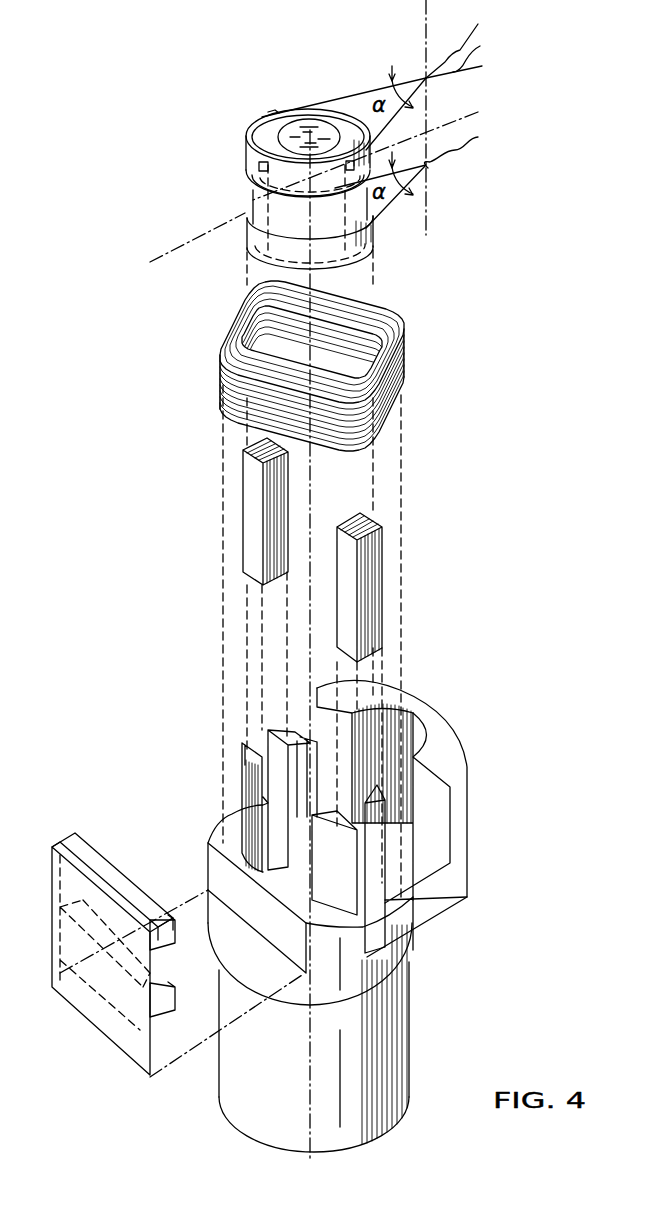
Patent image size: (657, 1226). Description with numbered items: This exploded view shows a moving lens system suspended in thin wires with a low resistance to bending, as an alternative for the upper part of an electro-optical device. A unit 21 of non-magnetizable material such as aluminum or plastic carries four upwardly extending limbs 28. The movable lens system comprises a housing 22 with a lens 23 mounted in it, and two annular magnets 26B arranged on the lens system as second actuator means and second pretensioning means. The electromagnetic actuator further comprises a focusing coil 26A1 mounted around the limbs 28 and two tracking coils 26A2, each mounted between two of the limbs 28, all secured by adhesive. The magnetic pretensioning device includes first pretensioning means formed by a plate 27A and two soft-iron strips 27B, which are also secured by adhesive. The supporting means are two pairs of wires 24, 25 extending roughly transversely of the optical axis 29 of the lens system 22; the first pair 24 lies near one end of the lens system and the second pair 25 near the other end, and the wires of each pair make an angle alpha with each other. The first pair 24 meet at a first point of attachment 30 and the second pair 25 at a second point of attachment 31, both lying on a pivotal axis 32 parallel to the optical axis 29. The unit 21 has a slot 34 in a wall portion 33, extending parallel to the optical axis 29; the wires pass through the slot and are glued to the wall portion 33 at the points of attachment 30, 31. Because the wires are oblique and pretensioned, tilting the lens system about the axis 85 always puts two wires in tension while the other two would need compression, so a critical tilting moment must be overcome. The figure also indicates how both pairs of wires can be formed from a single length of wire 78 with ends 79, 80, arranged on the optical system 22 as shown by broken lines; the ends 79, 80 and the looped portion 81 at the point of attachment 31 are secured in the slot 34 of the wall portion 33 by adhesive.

The unit 21 is at (388, 1053).
The housing 22 is at (287, 208).
The lens 23 is at (285, 130).
The first pair of wires 24 is at (360, 96).
The second pair of wires 25 is at (430, 170).
The focusing coil 26A1 is at (400, 347).
The tracking coils 26A2 is at (255, 508).
The annular magnets 26B is at (262, 172).
The plate 27A is at (92, 985).
The soft-iron strips 27B is at (162, 987).
The limbs 28 is at (255, 780).
The optical axis 29 is at (308, 70).
The first point of attachment 30 is at (427, 80).
The second point of attachment 31 is at (428, 165).
The pivotal axis 32 is at (376, 151).
The wall portion 33 is at (455, 816).
The slot 34 is at (427, 707).
The single length of wire 78 is at (476, 55).
The end of wire 79 is at (462, 43).
The end of wire 80 is at (462, 79).
The looped portion 81 is at (461, 146).
The tilting axis 85 is at (197, 235).